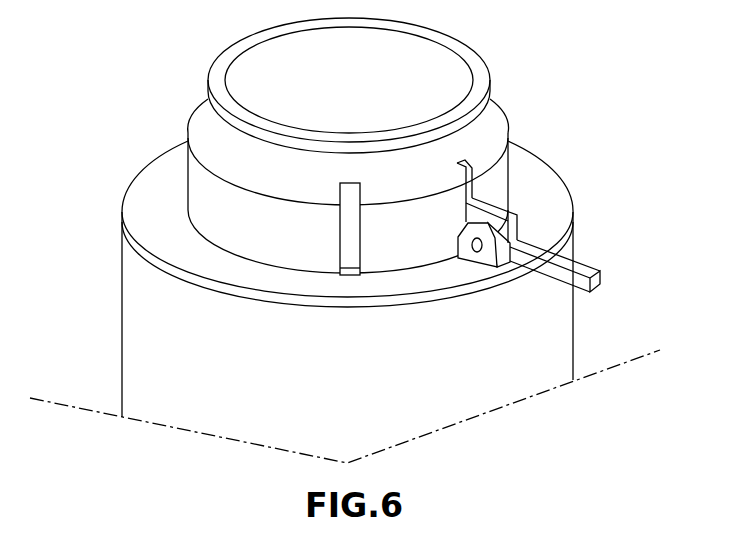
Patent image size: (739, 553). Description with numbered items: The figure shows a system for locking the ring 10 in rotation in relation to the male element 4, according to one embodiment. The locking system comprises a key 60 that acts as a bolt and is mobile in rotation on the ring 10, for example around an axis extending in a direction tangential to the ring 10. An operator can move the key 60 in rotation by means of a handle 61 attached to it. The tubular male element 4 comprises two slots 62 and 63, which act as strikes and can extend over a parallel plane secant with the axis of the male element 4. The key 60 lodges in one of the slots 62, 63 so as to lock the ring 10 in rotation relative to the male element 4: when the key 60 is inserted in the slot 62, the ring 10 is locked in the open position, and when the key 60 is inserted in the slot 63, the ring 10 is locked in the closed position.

The male element 4 is at (495, 100).
The ring 10 is at (575, 335).
The key 60 is at (520, 208).
The handle 61 is at (587, 260).
The slot 62 is at (463, 163).
The slot 63 is at (343, 240).